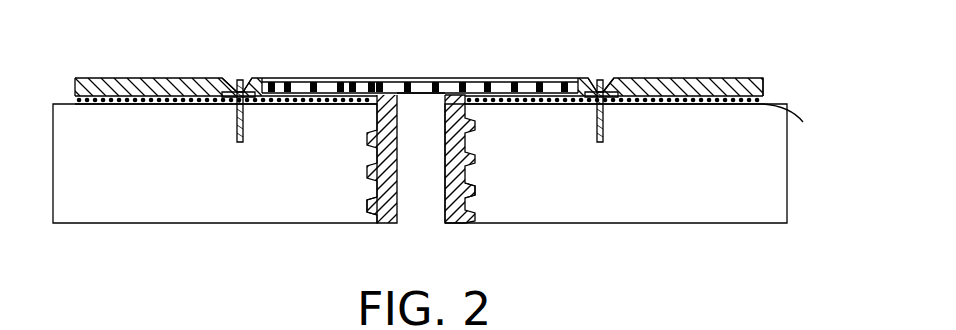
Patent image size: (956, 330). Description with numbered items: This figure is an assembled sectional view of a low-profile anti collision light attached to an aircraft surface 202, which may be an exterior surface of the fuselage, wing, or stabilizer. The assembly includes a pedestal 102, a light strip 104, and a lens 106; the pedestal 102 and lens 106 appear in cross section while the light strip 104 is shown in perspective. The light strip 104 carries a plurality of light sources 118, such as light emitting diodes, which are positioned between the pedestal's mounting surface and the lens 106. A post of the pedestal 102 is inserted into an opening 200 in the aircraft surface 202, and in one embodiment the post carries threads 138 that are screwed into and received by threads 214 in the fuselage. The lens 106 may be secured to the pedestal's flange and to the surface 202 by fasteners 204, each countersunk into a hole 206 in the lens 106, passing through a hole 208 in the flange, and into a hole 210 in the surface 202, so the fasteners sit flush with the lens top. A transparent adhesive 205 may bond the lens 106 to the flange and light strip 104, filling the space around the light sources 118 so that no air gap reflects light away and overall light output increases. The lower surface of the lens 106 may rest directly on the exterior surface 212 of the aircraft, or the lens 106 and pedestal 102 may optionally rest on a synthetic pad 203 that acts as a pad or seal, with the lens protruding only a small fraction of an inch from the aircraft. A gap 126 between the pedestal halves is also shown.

The pedestal 102 is at (466, 148).
The light strip 104 is at (364, 78).
The lens 106 is at (111, 80).
The light sources 118 is at (530, 80).
The gap 126 is at (437, 173).
The threads 138 is at (367, 204).
The opening 200 is at (378, 227).
The aircraft surface 202 is at (98, 133).
The synthetic pad 203 is at (801, 122).
The fasteners 204 is at (244, 130).
The transparent adhesive 205 is at (264, 80).
The hole 206 is at (236, 76).
The hole 208 is at (606, 112).
The hole 210 is at (234, 112).
The surface 212 is at (777, 88).
The threads 214 is at (475, 190).